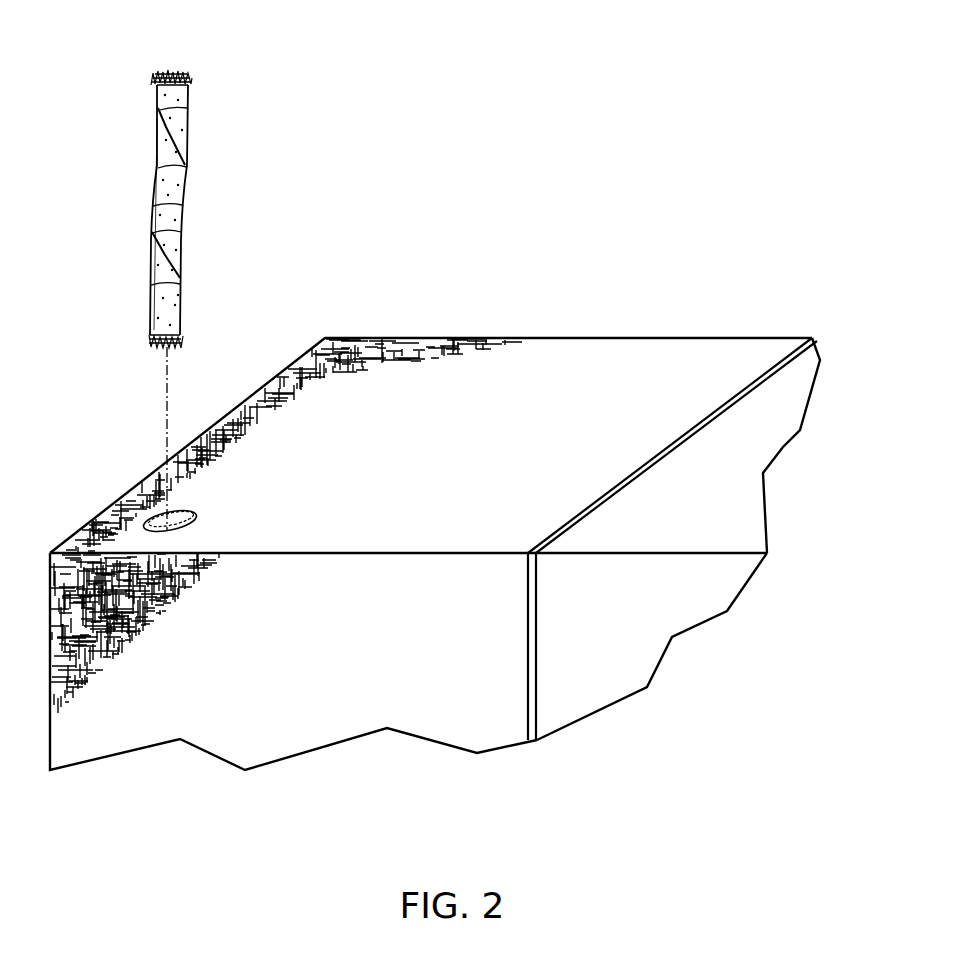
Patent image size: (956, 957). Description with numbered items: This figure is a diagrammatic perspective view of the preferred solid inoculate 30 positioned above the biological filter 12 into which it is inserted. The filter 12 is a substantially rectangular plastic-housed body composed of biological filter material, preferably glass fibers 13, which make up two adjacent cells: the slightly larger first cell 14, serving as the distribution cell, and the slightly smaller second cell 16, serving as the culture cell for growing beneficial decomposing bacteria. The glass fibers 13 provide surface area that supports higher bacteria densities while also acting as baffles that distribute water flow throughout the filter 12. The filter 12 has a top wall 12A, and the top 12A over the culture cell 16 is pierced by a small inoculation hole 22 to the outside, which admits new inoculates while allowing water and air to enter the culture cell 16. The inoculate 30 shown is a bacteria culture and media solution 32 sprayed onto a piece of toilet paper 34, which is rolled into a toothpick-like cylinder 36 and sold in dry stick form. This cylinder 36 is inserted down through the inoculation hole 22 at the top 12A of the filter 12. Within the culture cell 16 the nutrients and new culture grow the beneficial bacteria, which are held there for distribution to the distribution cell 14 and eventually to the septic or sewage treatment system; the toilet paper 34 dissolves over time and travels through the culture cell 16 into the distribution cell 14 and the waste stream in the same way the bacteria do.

The biological filter 12 is at (525, 255).
The top wall 12A is at (637, 366).
The glass fibers 13 is at (378, 360).
The first cell 14 is at (627, 672).
The second cell 16 is at (163, 700).
The inoculation hole 22 is at (158, 516).
The inoculate 30 is at (166, 178).
The bacteria culture and media solution 32 is at (163, 278).
The toilet paper 34 is at (156, 192).
The cylinder 36 is at (180, 76).